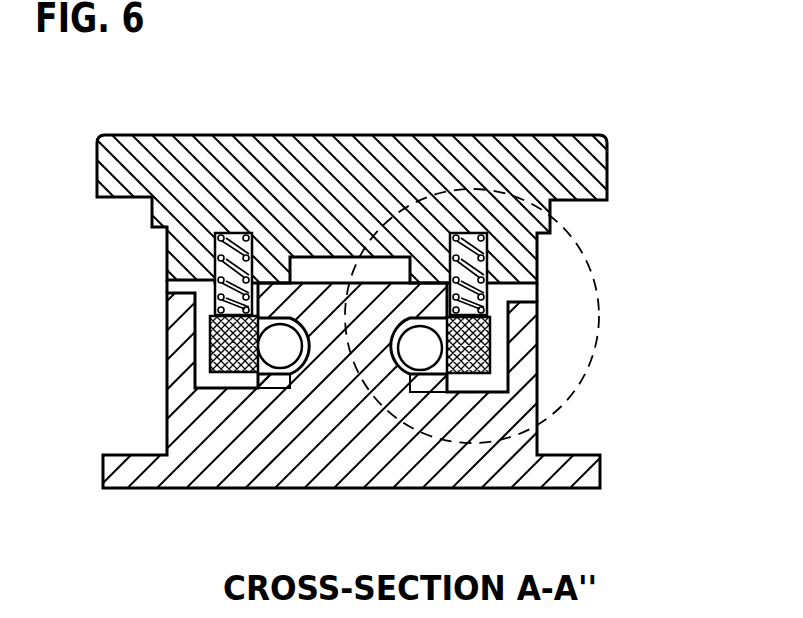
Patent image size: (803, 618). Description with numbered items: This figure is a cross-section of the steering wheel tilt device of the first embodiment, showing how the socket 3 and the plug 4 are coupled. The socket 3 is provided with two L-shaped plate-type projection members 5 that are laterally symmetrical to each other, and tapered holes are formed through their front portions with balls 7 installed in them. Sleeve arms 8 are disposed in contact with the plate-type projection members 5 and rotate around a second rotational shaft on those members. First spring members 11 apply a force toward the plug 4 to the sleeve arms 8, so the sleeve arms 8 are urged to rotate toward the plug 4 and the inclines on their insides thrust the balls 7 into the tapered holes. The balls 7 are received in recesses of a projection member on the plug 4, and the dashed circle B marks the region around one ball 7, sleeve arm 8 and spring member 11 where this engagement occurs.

The socket 3 is at (350, 135).
The plug 4 is at (363, 473).
The plate-type projection member 5 is at (419, 395).
The ball 7 is at (437, 352).
The sleeve arm 8 is at (483, 341).
The first spring member 11 is at (485, 262).
The detail region B is at (582, 252).